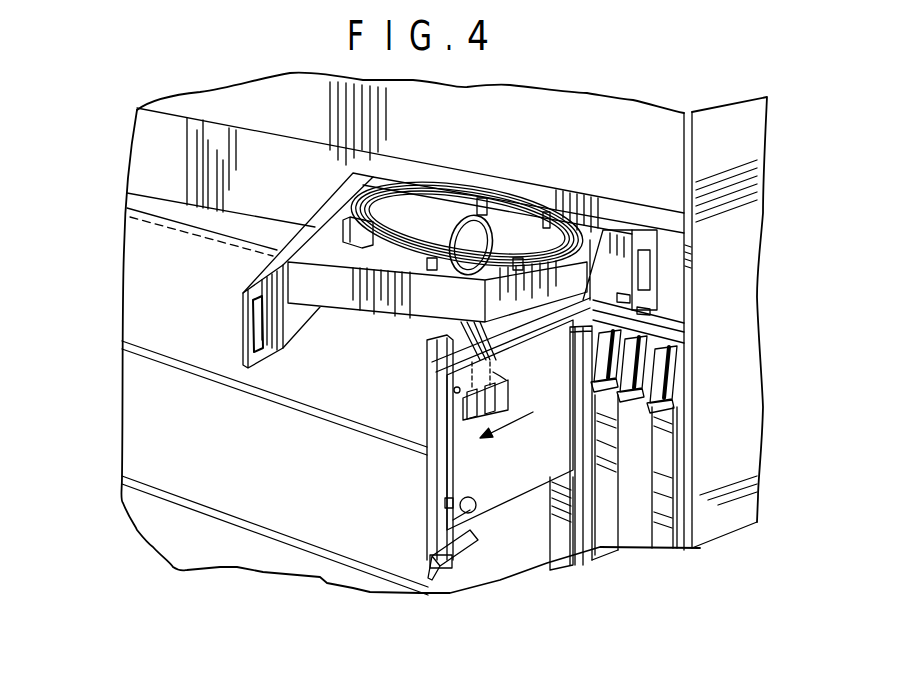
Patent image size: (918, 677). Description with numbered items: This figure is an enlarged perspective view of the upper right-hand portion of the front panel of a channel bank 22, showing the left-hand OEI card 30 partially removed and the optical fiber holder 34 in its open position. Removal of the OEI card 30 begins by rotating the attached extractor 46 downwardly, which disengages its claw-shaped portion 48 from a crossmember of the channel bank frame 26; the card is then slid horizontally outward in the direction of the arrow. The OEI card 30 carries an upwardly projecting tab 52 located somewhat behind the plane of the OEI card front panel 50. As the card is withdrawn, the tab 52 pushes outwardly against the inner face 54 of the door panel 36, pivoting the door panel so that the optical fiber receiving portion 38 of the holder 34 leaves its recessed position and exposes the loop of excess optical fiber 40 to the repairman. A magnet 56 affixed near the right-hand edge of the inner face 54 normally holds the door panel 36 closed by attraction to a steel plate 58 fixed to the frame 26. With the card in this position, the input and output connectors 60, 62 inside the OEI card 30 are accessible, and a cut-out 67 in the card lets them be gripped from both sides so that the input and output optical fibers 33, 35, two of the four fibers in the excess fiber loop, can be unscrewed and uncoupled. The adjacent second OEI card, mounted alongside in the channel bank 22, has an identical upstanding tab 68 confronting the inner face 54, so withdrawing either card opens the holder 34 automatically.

The channel bank 22 is at (588, 574).
The channel bank frame 26 is at (762, 226).
The OEI card 30 is at (412, 502).
The input optical fiber 33 is at (445, 275).
The holder 34 is at (308, 207).
The output optical fiber 35 is at (500, 207).
The door panel 36 is at (250, 275).
The optical fiber receiving portion 38 is at (325, 300).
The excess optical fiber 40 is at (423, 195).
The extractor 46 is at (478, 536).
The claw-shaped portion 48 is at (482, 500).
The OEI card front panel 50 is at (430, 453).
The tab 52 is at (432, 367).
The inner face 54 is at (277, 347).
The magnet 56 is at (245, 337).
The steel plate 58 is at (649, 243).
The input connector 60 is at (462, 418).
The output connector 62 is at (509, 397).
The cut-out 67 is at (500, 375).
The upstanding tab 68 is at (650, 316).